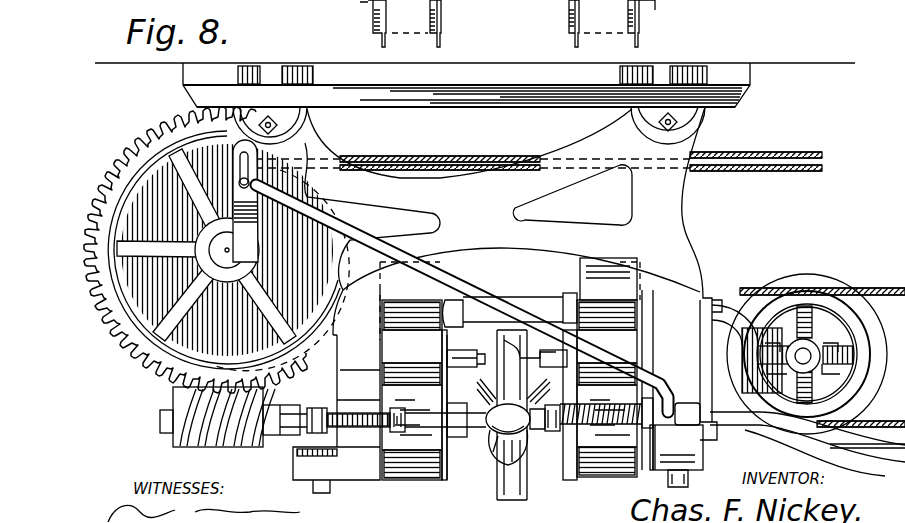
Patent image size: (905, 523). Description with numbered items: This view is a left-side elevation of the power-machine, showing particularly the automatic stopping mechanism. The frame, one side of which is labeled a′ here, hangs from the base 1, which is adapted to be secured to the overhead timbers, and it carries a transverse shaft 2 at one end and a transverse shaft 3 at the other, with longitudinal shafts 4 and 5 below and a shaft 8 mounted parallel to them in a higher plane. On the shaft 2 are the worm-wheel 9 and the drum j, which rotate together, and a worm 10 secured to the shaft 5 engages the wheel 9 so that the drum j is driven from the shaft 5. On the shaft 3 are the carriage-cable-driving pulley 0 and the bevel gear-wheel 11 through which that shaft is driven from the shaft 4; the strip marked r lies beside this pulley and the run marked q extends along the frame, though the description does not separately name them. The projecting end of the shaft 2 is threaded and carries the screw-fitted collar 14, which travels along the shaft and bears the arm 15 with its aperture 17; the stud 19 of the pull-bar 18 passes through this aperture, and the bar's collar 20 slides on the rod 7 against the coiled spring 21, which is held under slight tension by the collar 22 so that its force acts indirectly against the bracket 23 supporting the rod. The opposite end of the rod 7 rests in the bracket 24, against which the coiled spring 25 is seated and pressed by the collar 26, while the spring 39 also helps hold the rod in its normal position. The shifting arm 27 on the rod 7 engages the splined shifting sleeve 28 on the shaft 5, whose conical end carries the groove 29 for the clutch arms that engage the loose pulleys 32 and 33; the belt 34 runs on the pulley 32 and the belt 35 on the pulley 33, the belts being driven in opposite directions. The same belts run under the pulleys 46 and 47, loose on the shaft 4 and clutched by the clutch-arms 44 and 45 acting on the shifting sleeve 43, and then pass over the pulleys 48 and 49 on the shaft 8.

The base 1 is at (747, 92).
The rotative shaft 2 is at (238, 262).
The rotative shaft 3 is at (797, 350).
The rotative shaft 4 is at (362, 368).
The rotative shaft 5 is at (160, 421).
The shifting bar 7 is at (727, 425).
The shaft 8 is at (474, 0).
The worm-wheel 9 is at (216, 250).
The worm 10 is at (178, 446).
The bevel gear-wheel 11 is at (800, 274).
The screw-fitted collar 14 is at (238, 262).
The arm 15 is at (254, 222).
The aperture 17 is at (234, 152).
The pull-bar 18 is at (458, 291).
The stud 19 is at (250, 182).
The collar 20 is at (660, 428).
The coiled spring 21 is at (578, 432).
The collar 22 is at (565, 428).
The bracket 23 is at (686, 403).
The bracket 24 is at (305, 433).
The coiled spring 25 is at (336, 413).
The collar 26 is at (397, 437).
The shifting arm 27 is at (508, 440).
The shifting sleeve 28 is at (490, 434).
The groove 29 is at (526, 455).
The pulley 32 is at (455, 480).
The pulley 33 is at (645, 473).
The belt 34 is at (447, 480).
The belt 35 is at (642, 455).
The spring 39 is at (354, 0).
The shifting sleeve 43 is at (481, 390).
The clutch-arm 44 is at (466, 404).
The clutch-arm 45 is at (577, 390).
The pulley 46 is at (412, 390).
The pulley 47 is at (607, 388).
The pulley 48 is at (444, 24).
The pulley 49 is at (572, 26).
The frame a′ is at (680, 233).
The drum j is at (122, 343).
The belt q is at (822, 168).
The belt r is at (860, 288).
The carriage-cable-driving pulley 0 is at (856, 328).